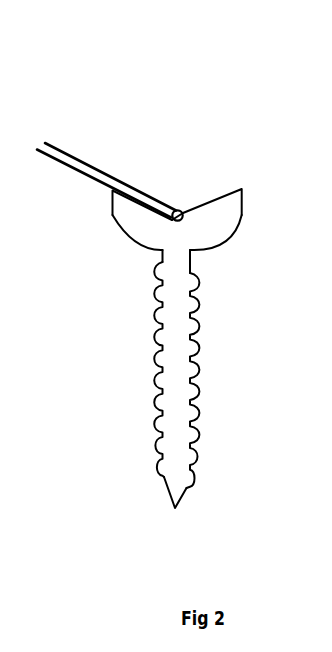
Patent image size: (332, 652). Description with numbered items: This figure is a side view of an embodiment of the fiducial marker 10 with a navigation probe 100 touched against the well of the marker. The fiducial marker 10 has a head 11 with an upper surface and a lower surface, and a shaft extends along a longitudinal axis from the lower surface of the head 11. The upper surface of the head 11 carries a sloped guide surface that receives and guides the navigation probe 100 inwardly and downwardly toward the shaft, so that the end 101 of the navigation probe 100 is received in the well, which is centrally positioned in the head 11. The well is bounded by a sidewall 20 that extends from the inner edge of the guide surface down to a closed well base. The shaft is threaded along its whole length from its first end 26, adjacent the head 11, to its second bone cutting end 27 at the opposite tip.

The fiducial marker 10 is at (231, 128).
The head 11 is at (218, 230).
The sidewall 20 is at (167, 215).
The first end 26 is at (176, 263).
The second bone cutting end 27 is at (176, 507).
The navigation probe 100 is at (68, 154).
The end of navigation probe 101 is at (178, 210).